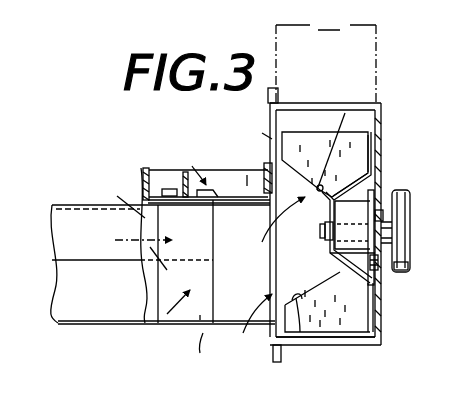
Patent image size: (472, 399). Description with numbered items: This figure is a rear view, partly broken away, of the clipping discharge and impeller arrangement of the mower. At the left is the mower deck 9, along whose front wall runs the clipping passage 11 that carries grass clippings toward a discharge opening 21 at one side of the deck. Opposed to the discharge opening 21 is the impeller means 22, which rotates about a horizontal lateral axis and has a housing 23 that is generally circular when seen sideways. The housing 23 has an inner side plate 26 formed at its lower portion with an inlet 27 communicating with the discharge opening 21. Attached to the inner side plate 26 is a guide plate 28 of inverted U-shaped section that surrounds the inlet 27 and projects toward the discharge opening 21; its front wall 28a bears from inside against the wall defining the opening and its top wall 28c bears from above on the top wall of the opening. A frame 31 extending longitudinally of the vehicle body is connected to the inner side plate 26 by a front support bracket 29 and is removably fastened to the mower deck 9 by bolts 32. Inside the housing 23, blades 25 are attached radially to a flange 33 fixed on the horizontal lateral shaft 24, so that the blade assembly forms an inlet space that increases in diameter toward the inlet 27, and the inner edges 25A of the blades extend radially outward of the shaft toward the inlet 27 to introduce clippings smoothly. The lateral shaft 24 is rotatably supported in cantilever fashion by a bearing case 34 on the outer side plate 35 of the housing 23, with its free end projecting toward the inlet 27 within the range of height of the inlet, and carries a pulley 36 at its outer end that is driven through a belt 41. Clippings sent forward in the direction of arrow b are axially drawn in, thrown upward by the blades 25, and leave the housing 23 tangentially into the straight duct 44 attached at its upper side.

The mower deck 9 is at (56, 249).
The clipping passage 11 is at (122, 197).
The discharge opening 21 is at (167, 316).
The impeller means 22 is at (382, 128).
The housing 23 is at (358, 348).
The horizontal lateral shaft 24 is at (336, 253).
The blades 25 is at (321, 143).
The inner edges 25A is at (346, 113).
The inner side plate 26 is at (255, 130).
The inlet 27 is at (210, 278).
The guide plate 28 is at (173, 189).
The front wall 28a is at (196, 345).
The top wall 28c is at (202, 168).
The front support bracket 29 is at (230, 191).
The frame 31 is at (175, 240).
The bolts 32 is at (151, 170).
The flange 33 is at (375, 313).
The bearing case 34 is at (379, 262).
The outer side plate 35 is at (381, 161).
The pulley 36 is at (410, 232).
The belt 41 is at (397, 211).
The straight duct 44 is at (378, 50).